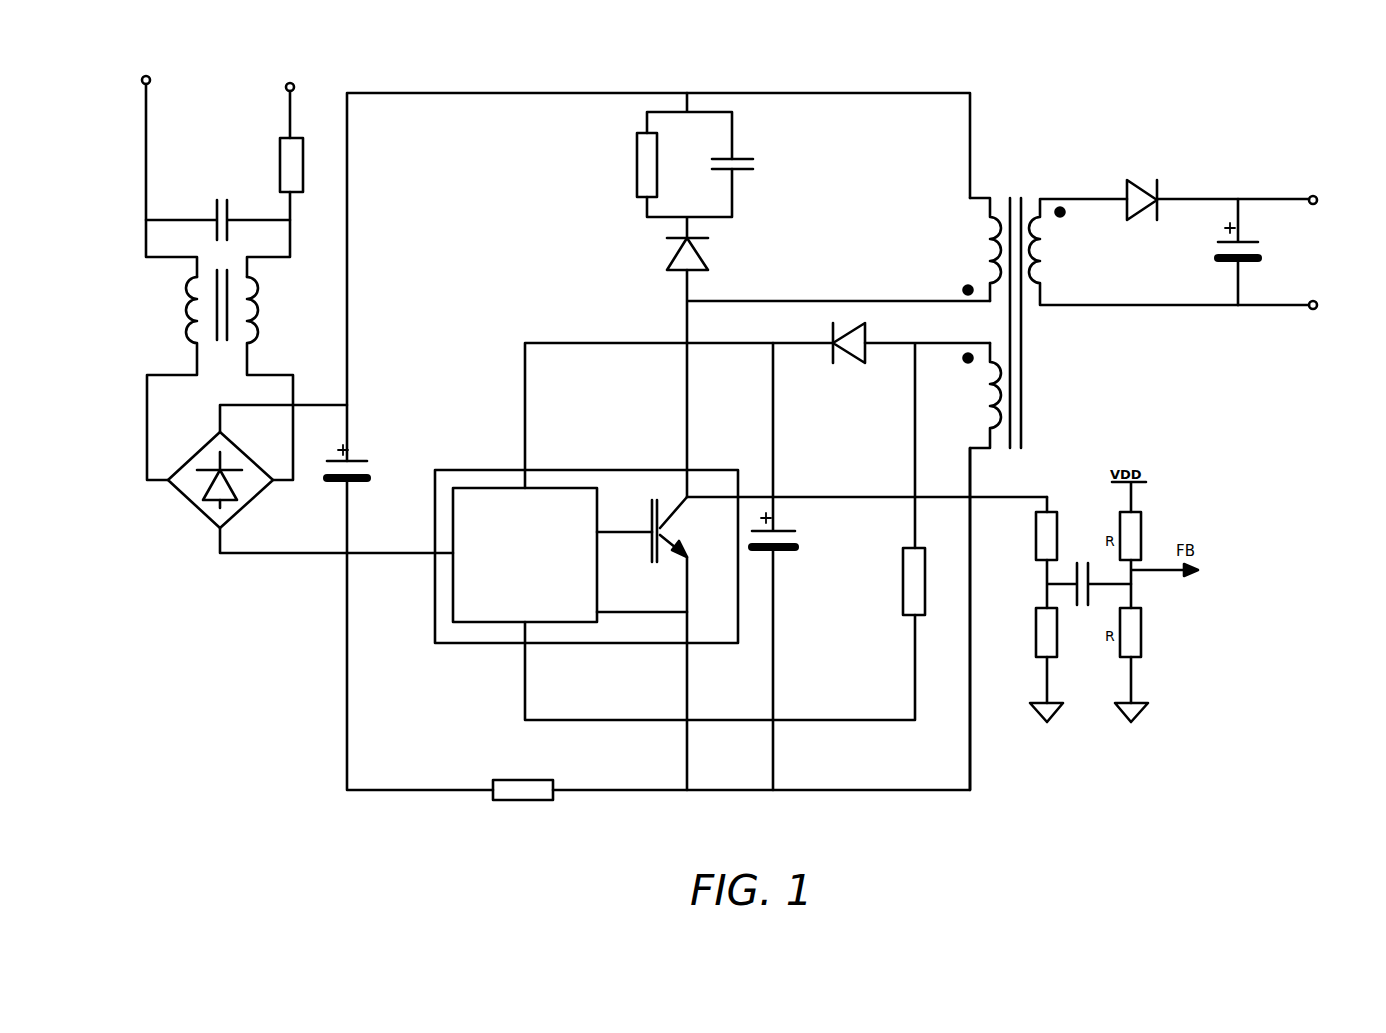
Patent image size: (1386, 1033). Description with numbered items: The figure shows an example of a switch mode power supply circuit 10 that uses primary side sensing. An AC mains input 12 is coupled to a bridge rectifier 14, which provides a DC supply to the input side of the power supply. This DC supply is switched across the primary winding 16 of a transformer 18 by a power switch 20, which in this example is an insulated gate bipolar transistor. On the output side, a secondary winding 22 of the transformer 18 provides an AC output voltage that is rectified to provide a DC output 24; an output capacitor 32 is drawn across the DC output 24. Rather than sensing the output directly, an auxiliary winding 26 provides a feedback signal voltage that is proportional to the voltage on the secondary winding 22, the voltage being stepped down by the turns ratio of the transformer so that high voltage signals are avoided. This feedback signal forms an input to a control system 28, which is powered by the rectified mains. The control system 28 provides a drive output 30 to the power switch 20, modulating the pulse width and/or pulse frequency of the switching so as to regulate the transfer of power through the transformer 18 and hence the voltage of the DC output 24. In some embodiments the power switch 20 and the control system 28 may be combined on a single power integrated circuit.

The switch mode power supply circuit 10 is at (262, 805).
The AC mains input 12 is at (247, 65).
The bridge rectifier 14 is at (202, 512).
The primary winding 16 is at (975, 200).
The transformer 18 is at (1022, 172).
The power switch 20 is at (698, 543).
The secondary winding 22 is at (1062, 199).
The DC output 24 is at (1293, 176).
The auxiliary winding 26 is at (977, 448).
The control system 28 is at (475, 623).
The drive output 30 is at (617, 533).
The output capacitor 32 is at (1248, 263).